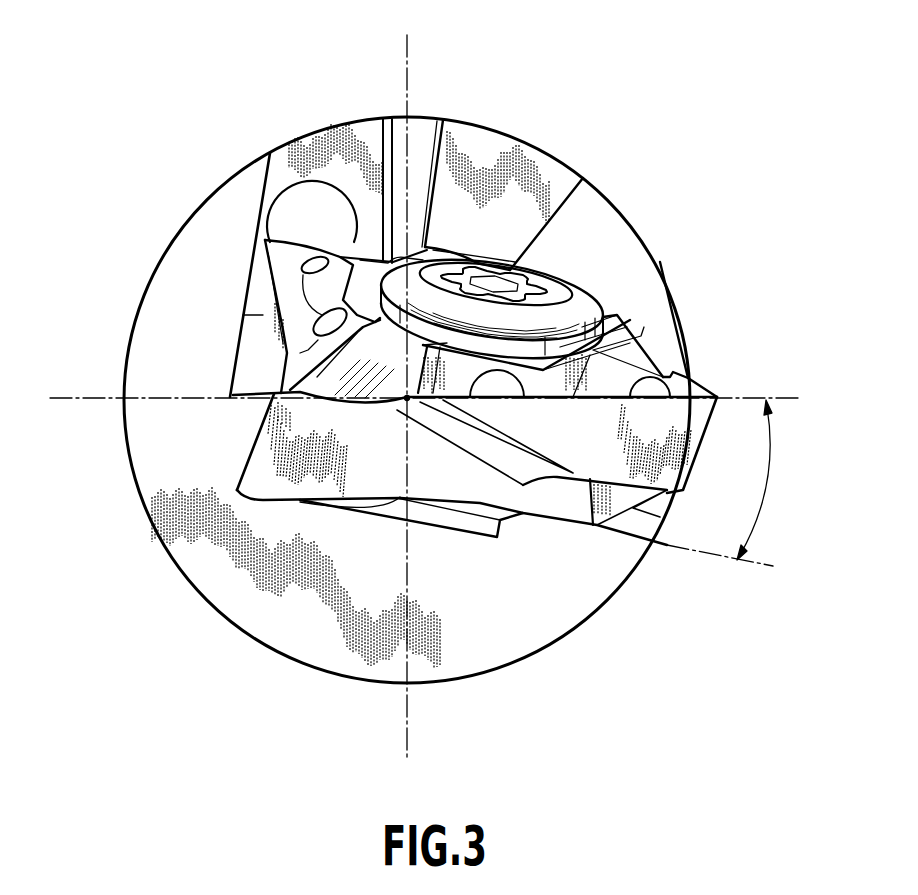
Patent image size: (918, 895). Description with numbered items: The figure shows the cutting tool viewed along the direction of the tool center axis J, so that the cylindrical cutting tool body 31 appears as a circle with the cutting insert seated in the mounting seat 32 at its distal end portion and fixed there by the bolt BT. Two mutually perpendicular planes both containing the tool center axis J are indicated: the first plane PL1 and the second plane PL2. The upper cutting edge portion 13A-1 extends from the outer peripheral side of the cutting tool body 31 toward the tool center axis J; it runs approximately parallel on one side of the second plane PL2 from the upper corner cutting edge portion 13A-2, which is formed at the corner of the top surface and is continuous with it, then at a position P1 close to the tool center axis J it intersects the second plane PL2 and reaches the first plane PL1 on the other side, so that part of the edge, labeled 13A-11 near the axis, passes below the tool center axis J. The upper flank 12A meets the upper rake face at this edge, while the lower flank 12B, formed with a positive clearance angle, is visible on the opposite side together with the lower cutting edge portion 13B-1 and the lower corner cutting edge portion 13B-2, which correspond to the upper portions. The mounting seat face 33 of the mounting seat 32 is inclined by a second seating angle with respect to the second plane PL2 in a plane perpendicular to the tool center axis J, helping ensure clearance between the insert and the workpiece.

The cutting tool body 31 is at (650, 247).
The first plane PL1 is at (410, 78).
The second plane PL2 is at (780, 397).
The tool center axis J is at (290, 349).
The insert seat bottom surface 13A-11 is at (407, 398).
The position P1 is at (440, 397).
The bolt BT is at (578, 310).
The upper cutting edge portion 13A-1 is at (633, 327).
The upper corner cutting edge portion 13A-2 is at (713, 395).
The lower flank 12B is at (270, 443).
The lower corner cutting edge portion 13B-2 is at (237, 492).
The lower cutting edge portion 13B-1 is at (303, 500).
The mounting seat face 33 is at (537, 518).
The mounting seat 32 is at (625, 530).
The upper flank 12A is at (652, 465).